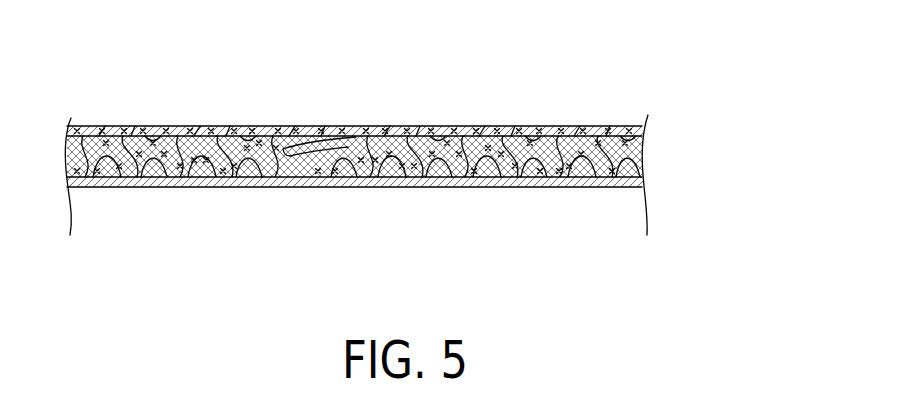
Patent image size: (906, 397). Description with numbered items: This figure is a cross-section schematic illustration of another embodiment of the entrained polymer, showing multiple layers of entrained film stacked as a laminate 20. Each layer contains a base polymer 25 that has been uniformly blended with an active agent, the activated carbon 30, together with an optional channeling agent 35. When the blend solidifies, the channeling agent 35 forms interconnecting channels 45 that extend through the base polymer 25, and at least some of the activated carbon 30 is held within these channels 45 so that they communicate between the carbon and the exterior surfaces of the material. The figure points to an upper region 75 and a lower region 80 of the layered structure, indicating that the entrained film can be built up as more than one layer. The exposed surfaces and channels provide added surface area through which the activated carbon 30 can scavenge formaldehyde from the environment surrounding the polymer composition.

The composite fabric / laminate 20 is at (644, 104).
The base polymer 25 is at (97, 132).
The activated carbon 30 is at (207, 137).
The channeling agent 35 is at (305, 129).
The interconnecting channels 45 is at (153, 130).
The upper layer 75 is at (677, 135).
The lower layer 80 is at (677, 195).